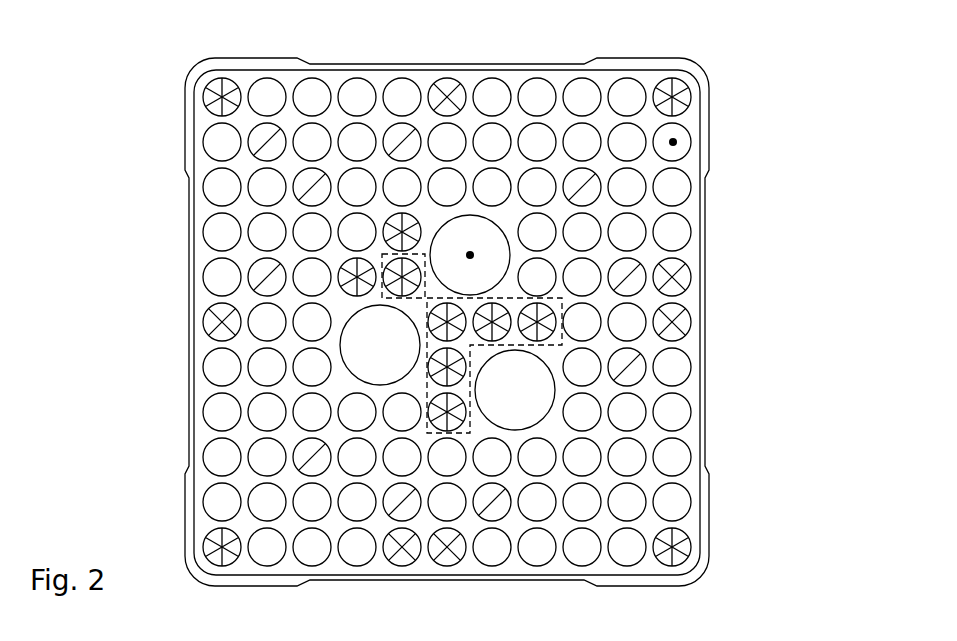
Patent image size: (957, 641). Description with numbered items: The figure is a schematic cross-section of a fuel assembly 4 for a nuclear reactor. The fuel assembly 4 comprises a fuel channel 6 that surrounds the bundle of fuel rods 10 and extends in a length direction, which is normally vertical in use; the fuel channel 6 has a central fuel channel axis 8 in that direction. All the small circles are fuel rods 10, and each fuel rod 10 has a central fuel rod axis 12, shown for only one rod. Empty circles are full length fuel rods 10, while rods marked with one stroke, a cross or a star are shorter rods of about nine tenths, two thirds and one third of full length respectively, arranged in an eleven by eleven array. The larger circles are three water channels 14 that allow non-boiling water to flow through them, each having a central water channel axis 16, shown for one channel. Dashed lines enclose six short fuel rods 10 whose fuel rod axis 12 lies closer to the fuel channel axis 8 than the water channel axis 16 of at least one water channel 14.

The fuel assembly 4 is at (175, 52).
The fuel channel 6 is at (705, 516).
The central fuel channel axis 8 is at (462, 310).
The fuel rods 10 is at (680, 88).
The central fuel rod axis 12 is at (677, 142).
The water channels 14 is at (450, 229).
The central water channel axis 16 is at (471, 254).